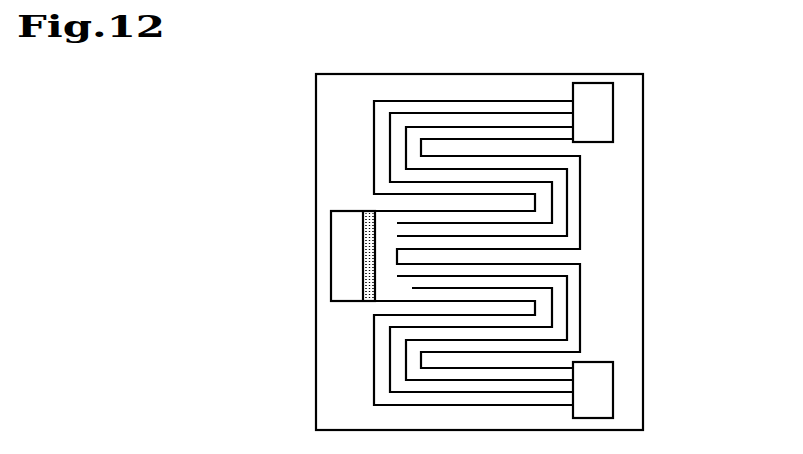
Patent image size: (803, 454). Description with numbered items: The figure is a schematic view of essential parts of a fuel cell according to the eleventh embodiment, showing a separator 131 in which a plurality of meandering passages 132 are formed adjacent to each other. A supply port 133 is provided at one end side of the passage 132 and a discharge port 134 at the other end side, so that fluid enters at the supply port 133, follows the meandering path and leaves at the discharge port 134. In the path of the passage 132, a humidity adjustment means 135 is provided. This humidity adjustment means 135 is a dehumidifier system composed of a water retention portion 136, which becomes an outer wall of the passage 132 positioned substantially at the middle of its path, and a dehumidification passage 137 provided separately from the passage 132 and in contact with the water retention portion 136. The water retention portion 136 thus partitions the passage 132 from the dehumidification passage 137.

The separator 131 is at (316, 120).
The meandering passage 132 is at (547, 229).
The supply port 133 is at (597, 114).
The discharge port 134 is at (600, 393).
The humidity adjustment means 135 is at (330, 268).
The water retention portion 136 is at (367, 292).
The dehumidification passage 137 is at (337, 238).